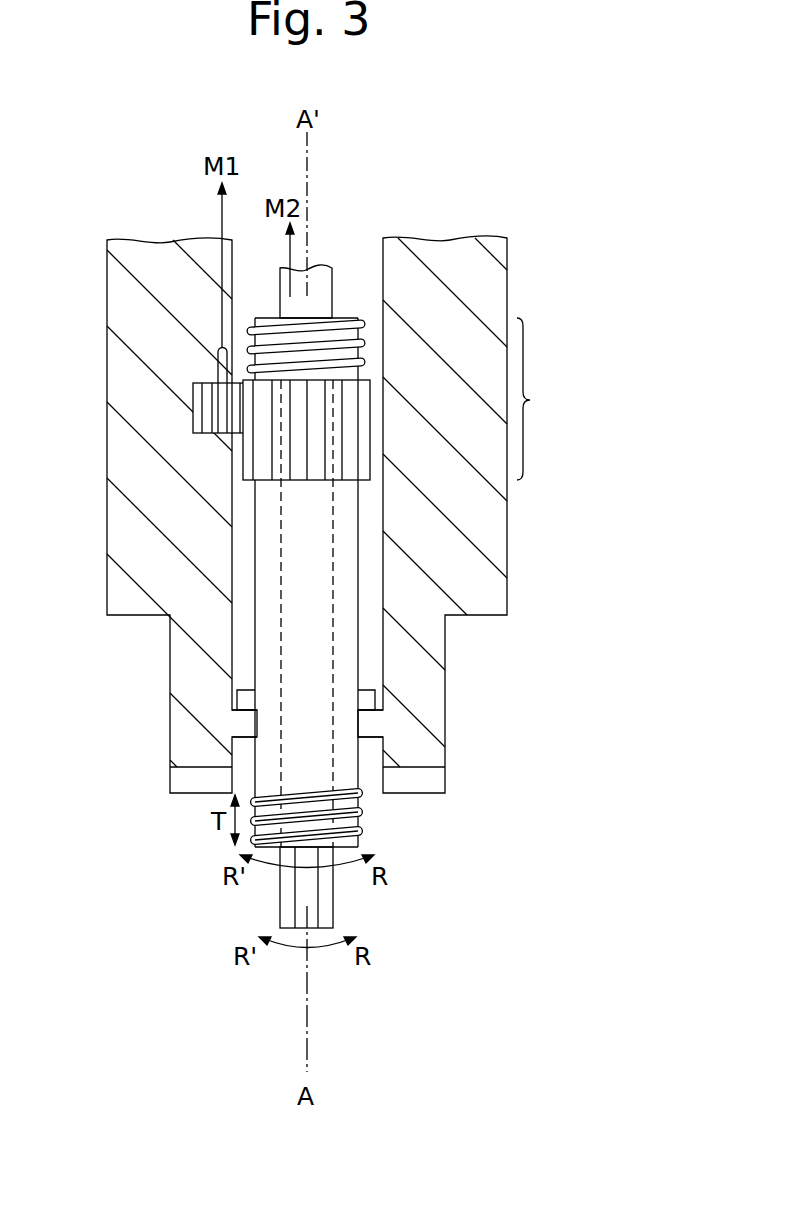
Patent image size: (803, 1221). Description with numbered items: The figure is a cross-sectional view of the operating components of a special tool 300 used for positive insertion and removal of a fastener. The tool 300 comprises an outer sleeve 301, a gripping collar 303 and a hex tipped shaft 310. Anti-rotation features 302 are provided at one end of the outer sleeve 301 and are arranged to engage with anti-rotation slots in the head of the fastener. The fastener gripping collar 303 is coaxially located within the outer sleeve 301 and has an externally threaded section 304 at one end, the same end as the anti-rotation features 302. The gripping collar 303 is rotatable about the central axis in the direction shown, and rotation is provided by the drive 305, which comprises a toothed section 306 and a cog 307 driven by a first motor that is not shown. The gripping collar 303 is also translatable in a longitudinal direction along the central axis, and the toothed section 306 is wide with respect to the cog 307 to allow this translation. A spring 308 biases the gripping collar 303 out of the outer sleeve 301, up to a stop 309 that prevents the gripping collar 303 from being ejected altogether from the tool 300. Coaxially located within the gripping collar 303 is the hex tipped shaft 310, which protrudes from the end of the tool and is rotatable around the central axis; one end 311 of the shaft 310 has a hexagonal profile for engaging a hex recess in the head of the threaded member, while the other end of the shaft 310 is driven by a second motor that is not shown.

The tool 300 is at (558, 254).
The outer sleeve 301 is at (478, 577).
The anti-rotation features 302 is at (187, 780).
The gripping collar 303 is at (350, 680).
The externally threaded section 304 is at (363, 812).
The drive 305 is at (550, 399).
The toothed section 306 is at (352, 463).
The cog 307 is at (193, 397).
The spring 308 is at (347, 320).
The stop 309 is at (238, 728).
The hex tipped shaft 310 is at (333, 624).
The end of the shaft 311 is at (280, 895).